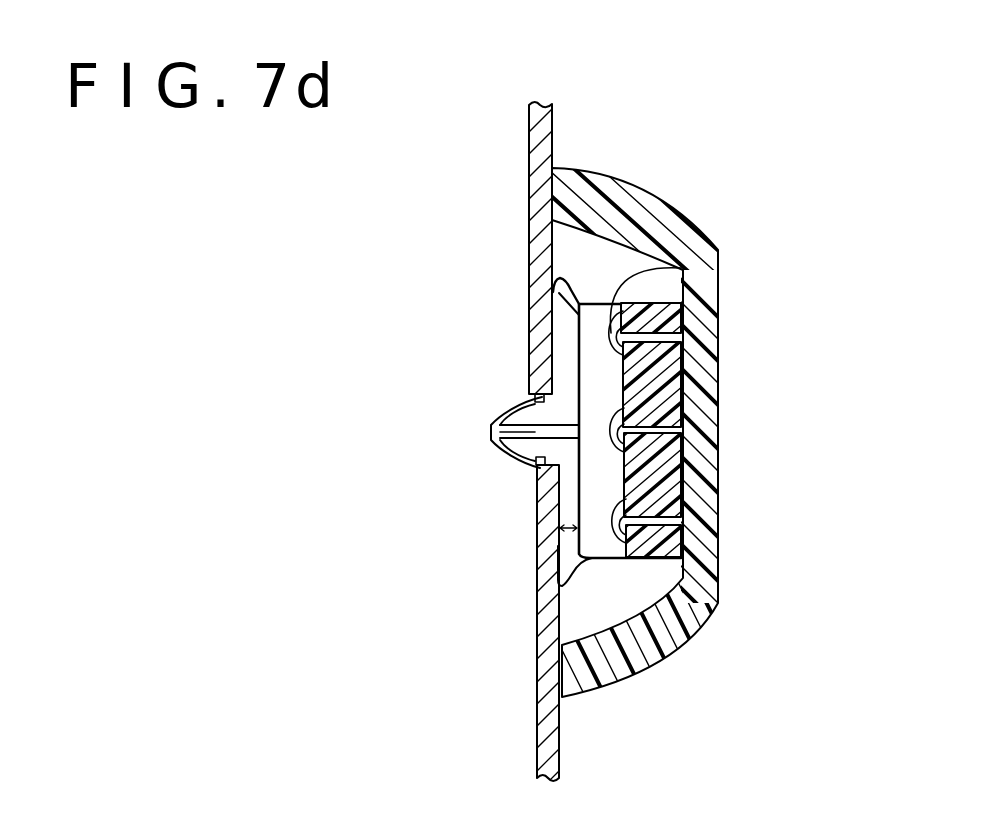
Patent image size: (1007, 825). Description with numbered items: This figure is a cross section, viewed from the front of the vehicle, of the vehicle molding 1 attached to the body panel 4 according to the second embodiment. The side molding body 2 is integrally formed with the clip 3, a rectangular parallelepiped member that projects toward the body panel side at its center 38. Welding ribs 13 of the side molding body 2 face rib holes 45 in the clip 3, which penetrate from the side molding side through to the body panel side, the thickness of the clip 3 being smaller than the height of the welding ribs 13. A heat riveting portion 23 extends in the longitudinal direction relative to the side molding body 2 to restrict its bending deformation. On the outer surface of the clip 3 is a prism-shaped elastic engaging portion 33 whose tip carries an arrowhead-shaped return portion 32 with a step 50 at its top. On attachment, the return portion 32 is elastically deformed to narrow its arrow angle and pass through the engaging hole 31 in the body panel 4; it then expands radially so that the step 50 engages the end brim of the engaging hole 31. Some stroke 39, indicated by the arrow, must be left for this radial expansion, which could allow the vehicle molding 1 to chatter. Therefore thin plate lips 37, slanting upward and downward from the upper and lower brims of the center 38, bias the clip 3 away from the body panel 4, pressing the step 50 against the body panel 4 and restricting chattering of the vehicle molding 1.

The vehicle molding 1 is at (748, 105).
The side molding body 2 is at (745, 213).
The clip 3 is at (469, 385).
The body panel 4 is at (478, 449).
The welding ribs 13 is at (681, 318).
The heat riveting portion 23 is at (681, 268).
The engaging hole 31 is at (535, 458).
The return portion 32 is at (520, 403).
The elastic engaging portion 33 is at (492, 430).
The lip 37 is at (553, 293).
The center 38 is at (601, 464).
The stroke 39 is at (566, 533).
The rib holes 45 is at (681, 428).
The step 50 is at (530, 341).